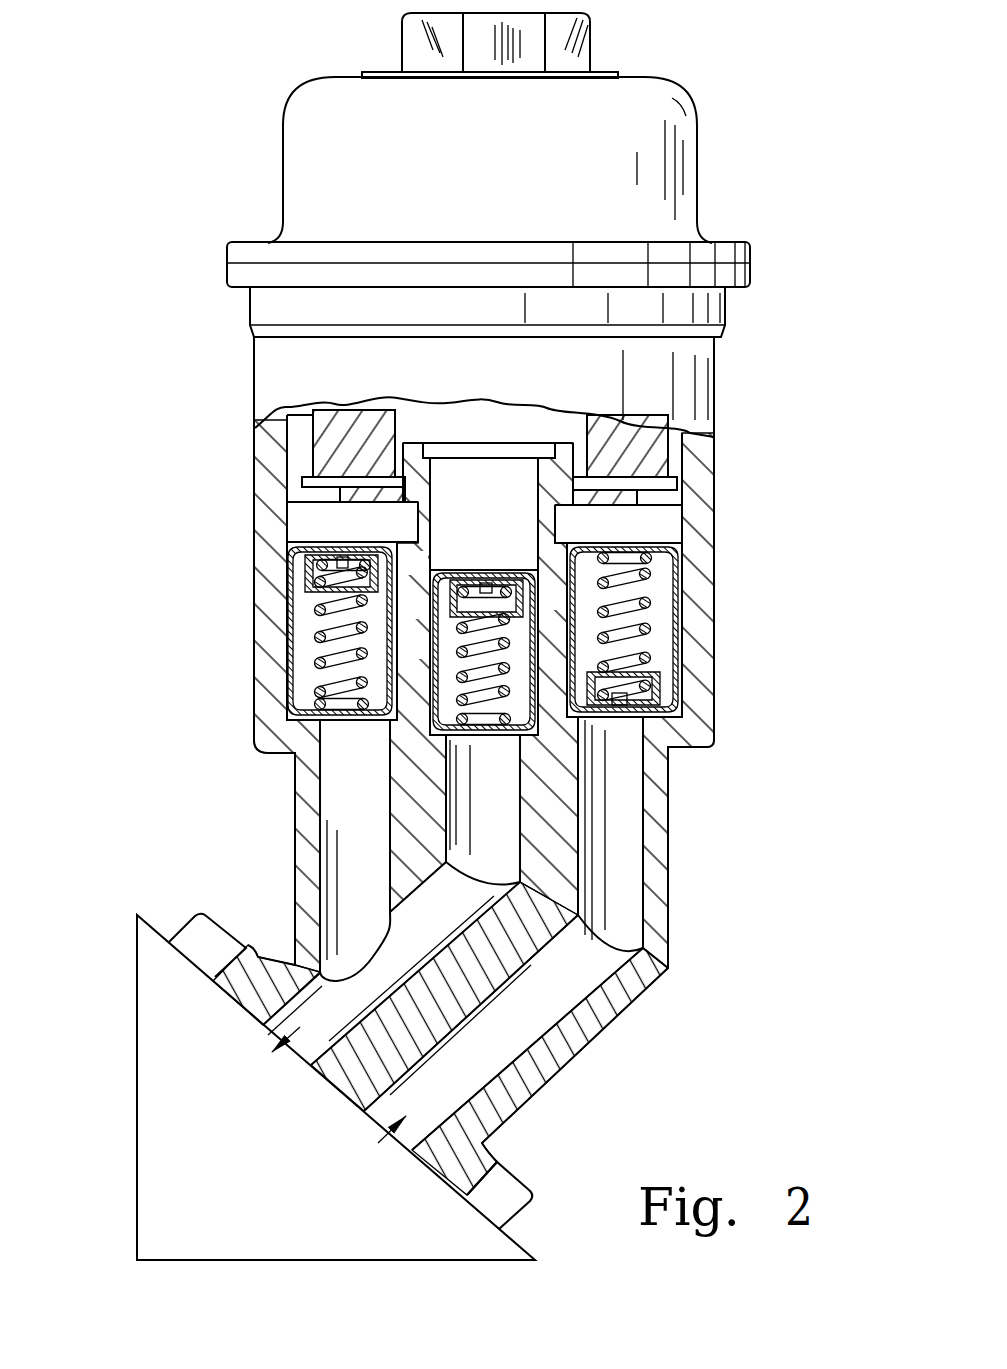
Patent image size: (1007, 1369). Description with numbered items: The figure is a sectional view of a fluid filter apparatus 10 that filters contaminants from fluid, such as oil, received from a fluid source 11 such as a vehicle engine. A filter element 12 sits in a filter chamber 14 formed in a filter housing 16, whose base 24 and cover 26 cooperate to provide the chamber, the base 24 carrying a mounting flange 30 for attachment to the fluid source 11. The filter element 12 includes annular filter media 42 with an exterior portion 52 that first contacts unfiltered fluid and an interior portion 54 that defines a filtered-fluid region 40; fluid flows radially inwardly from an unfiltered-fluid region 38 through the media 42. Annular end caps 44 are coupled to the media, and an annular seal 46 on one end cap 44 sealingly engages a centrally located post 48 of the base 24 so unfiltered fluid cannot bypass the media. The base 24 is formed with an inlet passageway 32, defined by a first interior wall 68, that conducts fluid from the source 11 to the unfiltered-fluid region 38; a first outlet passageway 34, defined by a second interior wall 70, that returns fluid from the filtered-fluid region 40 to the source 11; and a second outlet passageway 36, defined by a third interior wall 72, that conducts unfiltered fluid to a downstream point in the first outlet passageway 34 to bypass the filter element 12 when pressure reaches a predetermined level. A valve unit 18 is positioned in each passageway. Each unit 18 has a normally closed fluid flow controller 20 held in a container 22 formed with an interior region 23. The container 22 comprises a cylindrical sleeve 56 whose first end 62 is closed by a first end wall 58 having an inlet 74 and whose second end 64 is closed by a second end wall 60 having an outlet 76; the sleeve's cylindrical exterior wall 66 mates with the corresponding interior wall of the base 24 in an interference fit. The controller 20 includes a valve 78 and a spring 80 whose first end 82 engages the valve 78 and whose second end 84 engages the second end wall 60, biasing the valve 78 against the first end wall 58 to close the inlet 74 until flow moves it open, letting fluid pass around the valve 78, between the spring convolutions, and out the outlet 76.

The fluid filter apparatus 10 is at (148, 112).
The fluid source 11 is at (160, 905).
The filter element 12 is at (330, 447).
The filter chamber 14 is at (326, 504).
The filter housing 16 is at (318, 217).
The valve unit 18 is at (698, 617).
The fluid flow controller 20 is at (482, 554).
The container 22 is at (278, 660).
The interior region 23 is at (742, 557).
The base 24 is at (280, 366).
The cover 26 is at (318, 152).
The mounting flange 30 is at (203, 910).
The inlet passageway 32 is at (670, 805).
The first outlet passageway 34 is at (447, 945).
The second outlet passageway 36 is at (322, 890).
The unfiltered-fluid region 38 is at (672, 507).
The filtered-fluid region 40 is at (477, 420).
The annular filter media 42 is at (358, 426).
The annular end cap 44 is at (300, 478).
The annular seal 46 is at (427, 440).
The post 48 is at (437, 463).
The exterior portion 52 is at (302, 428).
The interior portion 54 is at (413, 437).
The cylindrical sleeve 56 is at (290, 622).
The first end wall 58 is at (490, 548).
The second end wall 60 is at (300, 752).
The first end 62 is at (532, 515).
The second end 64 is at (705, 548).
The cylindrical exterior wall 66 is at (546, 814).
The first interior wall 68 is at (700, 660).
The second interior wall 70 is at (525, 772).
The third interior wall 72 is at (290, 690).
The inlet 74 is at (337, 553).
The outlet 76 is at (605, 556).
The valve 78 is at (690, 700).
The spring 80 is at (486, 679).
The first end 82 is at (512, 552).
The second end 84 is at (600, 553).